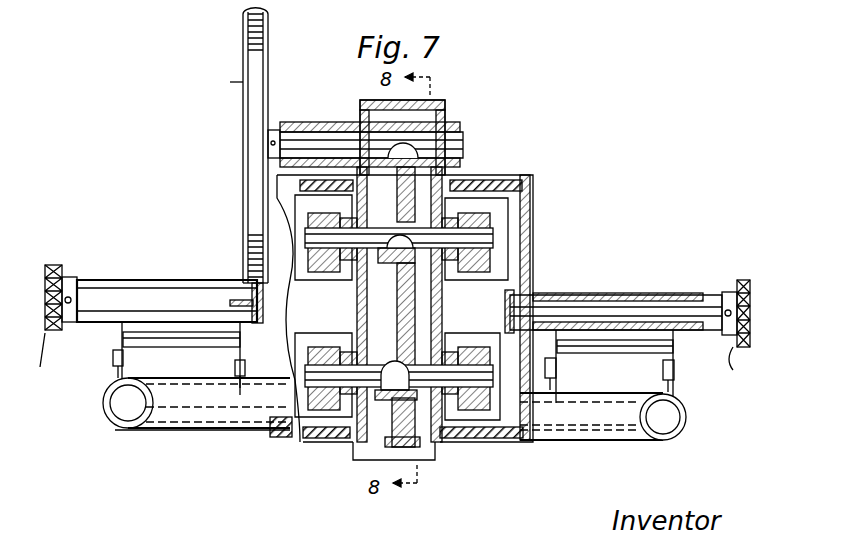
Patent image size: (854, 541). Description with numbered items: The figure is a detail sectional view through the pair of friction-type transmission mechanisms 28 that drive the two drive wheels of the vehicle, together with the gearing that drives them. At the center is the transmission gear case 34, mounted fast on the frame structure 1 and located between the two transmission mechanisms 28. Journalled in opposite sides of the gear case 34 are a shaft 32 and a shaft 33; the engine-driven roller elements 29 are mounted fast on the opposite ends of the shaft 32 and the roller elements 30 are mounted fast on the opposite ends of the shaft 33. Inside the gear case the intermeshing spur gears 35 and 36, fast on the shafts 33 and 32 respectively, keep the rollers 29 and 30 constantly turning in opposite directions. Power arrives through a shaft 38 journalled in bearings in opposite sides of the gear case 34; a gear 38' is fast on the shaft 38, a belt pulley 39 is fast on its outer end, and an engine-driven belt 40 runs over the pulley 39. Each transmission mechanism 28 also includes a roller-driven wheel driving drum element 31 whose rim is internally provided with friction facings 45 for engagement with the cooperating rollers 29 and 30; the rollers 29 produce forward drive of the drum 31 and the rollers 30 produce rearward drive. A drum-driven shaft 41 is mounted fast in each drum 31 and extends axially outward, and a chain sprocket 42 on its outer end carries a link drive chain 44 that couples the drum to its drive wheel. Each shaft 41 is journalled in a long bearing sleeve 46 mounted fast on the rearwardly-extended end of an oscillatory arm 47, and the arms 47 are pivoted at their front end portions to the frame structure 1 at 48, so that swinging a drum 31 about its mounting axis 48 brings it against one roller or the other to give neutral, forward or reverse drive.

The frame structure 1 is at (615, 408).
The transmission mechanism 28 is at (528, 202).
The roller element 29 is at (508, 220).
The roller element 30 is at (493, 413).
The drum element 31 is at (470, 178).
The shaft 32 is at (470, 238).
The shaft 33 is at (427, 373).
The transmission gear case 34 is at (365, 455).
The spur gear 35 is at (398, 330).
The spur gear 36 is at (410, 190).
The shaft 38 is at (387, 128).
The gear 38' is at (443, 118).
The belt pulley 39 is at (230, 82).
The engine-driven belt 40 is at (252, 63).
The drum-driven shaft 41 is at (77, 288).
The chain sprocket 42 is at (50, 267).
The link drive chain 44 is at (386, 366).
The friction facing 45 is at (507, 178).
The bearing sleeve 46 is at (117, 288).
The oscillatory arm 47 is at (240, 345).
The pivot 48 is at (110, 356).